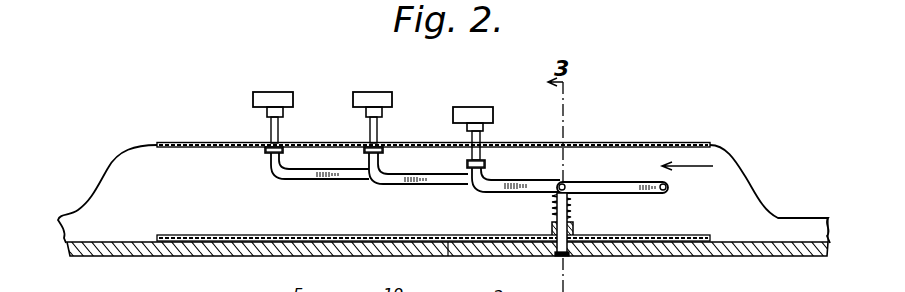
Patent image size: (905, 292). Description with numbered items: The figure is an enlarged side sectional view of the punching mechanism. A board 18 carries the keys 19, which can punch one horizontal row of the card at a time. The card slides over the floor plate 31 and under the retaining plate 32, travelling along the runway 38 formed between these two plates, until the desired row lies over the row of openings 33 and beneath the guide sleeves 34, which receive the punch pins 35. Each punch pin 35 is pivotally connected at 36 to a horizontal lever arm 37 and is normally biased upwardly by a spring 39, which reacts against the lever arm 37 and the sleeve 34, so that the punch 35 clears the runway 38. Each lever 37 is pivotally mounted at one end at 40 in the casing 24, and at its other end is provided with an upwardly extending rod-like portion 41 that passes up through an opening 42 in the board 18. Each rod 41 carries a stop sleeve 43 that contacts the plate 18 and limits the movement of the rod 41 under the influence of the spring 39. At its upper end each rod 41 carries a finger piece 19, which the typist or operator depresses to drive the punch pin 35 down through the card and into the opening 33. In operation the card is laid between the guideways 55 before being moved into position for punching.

The board 18 is at (203, 141).
The key 19 is at (285, 93).
The casing 24 is at (727, 182).
The floor plate 31 is at (216, 248).
The retaining plate 32 is at (283, 233).
The opening 33 is at (553, 256).
The guide sleeve 34 is at (573, 235).
The punch pin 35 is at (552, 228).
The pivotal connection 36 is at (572, 181).
The arm 37 is at (538, 186).
The runway 38 is at (447, 242).
The spring 39 is at (571, 207).
The pivot 40 is at (663, 194).
The rod 41 is at (272, 167).
The opening 42 is at (287, 147).
The stop sleeve 43 is at (265, 152).
The guideway 55 is at (813, 228).